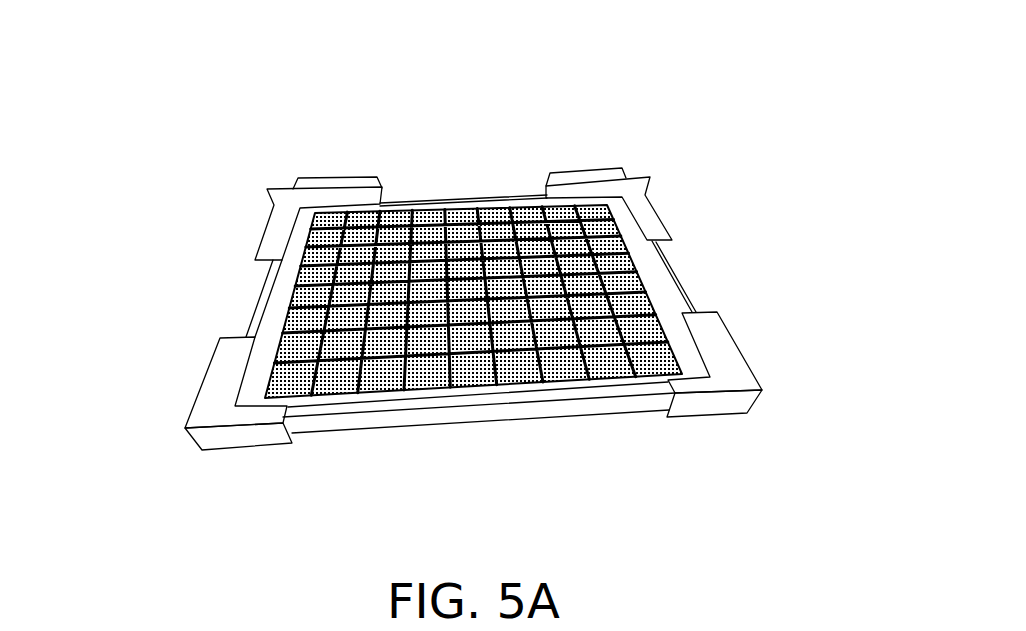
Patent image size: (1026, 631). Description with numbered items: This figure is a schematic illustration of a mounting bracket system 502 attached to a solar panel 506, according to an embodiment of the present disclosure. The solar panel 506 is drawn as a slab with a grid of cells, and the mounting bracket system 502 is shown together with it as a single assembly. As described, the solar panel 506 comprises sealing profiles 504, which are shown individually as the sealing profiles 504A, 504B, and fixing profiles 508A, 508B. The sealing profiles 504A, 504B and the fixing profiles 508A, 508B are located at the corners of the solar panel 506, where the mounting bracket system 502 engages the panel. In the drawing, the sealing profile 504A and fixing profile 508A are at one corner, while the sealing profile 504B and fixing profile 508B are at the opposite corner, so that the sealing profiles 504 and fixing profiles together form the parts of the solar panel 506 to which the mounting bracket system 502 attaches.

The mounting bracket system 502 is at (713, 83).
The sealing profiles 504 is at (570, 404).
The sealing profile 504A is at (650, 222).
The sealing profile 504B is at (212, 385).
The solar panel 506 is at (635, 312).
The fixing profile 508A is at (596, 184).
The fixing profile 508B is at (248, 443).